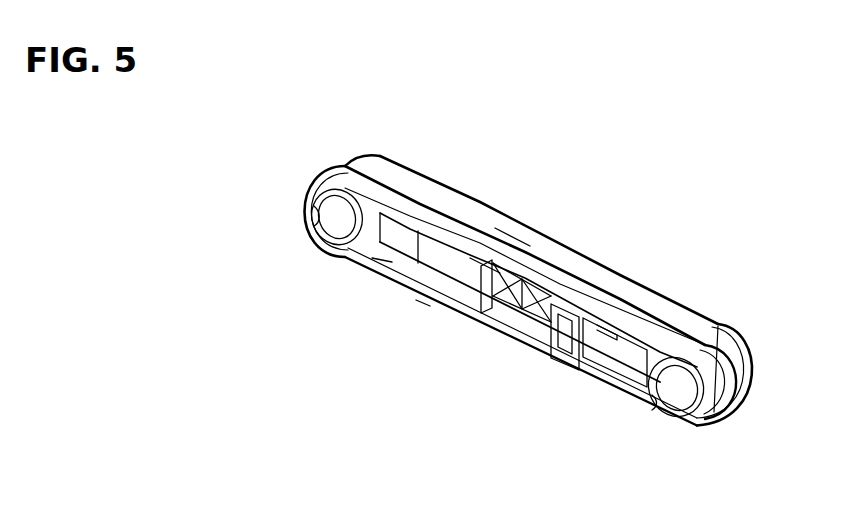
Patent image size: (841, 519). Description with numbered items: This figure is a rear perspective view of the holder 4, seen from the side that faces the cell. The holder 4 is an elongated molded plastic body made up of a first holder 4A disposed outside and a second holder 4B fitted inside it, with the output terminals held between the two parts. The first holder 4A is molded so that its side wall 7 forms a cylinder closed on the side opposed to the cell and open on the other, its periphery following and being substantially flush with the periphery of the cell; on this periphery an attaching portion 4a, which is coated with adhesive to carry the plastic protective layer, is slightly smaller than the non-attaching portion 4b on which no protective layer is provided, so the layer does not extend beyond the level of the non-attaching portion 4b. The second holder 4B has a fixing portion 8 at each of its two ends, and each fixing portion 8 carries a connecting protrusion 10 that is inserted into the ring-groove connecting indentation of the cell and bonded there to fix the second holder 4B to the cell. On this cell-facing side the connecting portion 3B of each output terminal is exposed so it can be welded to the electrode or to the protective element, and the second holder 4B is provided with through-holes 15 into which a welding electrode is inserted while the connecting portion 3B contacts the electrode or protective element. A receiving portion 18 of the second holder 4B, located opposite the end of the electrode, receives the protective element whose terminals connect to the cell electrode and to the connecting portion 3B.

The holder 4 is at (529, 290).
The first holder 4A is at (628, 279).
The second holder 4B is at (506, 272).
The attaching portion 4a is at (488, 275).
The non-attaching portion 4b is at (512, 244).
The connecting portion 3B is at (396, 242).
The side wall 7 is at (478, 272).
The fixing portion 8 is at (330, 216).
The connecting protrusion 10 is at (320, 212).
The through-hole 15 is at (378, 255).
The receiving portion 18 is at (418, 300).